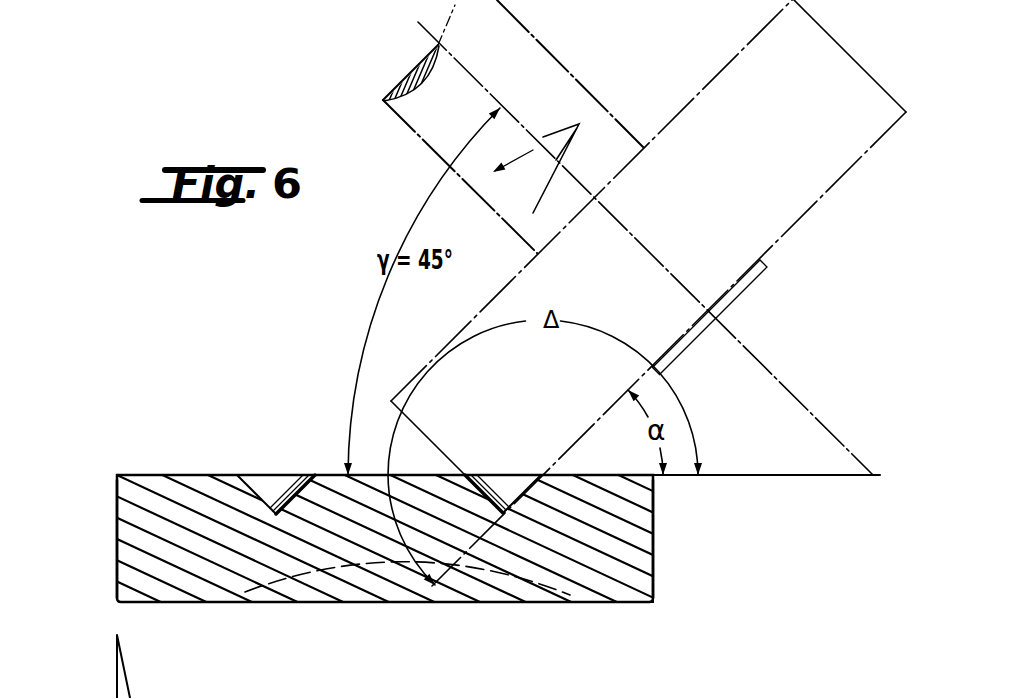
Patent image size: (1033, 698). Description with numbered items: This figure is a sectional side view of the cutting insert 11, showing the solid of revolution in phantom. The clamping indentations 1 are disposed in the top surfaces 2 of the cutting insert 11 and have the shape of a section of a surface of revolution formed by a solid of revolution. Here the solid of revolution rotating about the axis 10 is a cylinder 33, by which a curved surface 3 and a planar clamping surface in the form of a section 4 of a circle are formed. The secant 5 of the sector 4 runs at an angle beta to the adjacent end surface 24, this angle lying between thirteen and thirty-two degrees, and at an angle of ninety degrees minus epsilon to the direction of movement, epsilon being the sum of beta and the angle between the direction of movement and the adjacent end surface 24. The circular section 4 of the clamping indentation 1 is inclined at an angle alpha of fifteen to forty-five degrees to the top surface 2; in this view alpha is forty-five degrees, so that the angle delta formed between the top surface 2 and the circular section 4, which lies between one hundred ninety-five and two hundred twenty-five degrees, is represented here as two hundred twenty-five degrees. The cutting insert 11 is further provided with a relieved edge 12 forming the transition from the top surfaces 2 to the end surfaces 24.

The clamping indentation 1 is at (275, 488).
The top surface 2 is at (165, 473).
The curved surface 3 is at (292, 485).
The section of a circle 4 is at (257, 488).
The secant 5 is at (254, 487).
The axis 10 is at (437, 43).
The cutting insert 11 is at (658, 512).
The relieved edge 12 is at (125, 475).
The end surface 24 is at (115, 527).
The cylinder 33 is at (800, 226).